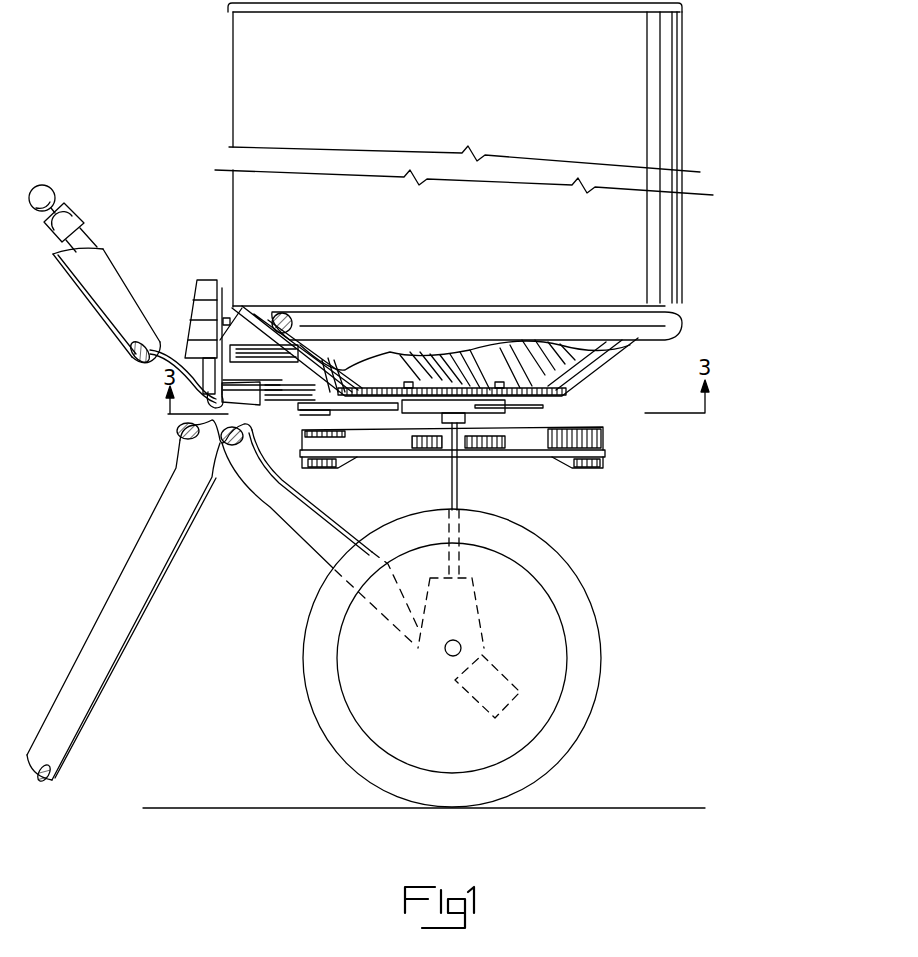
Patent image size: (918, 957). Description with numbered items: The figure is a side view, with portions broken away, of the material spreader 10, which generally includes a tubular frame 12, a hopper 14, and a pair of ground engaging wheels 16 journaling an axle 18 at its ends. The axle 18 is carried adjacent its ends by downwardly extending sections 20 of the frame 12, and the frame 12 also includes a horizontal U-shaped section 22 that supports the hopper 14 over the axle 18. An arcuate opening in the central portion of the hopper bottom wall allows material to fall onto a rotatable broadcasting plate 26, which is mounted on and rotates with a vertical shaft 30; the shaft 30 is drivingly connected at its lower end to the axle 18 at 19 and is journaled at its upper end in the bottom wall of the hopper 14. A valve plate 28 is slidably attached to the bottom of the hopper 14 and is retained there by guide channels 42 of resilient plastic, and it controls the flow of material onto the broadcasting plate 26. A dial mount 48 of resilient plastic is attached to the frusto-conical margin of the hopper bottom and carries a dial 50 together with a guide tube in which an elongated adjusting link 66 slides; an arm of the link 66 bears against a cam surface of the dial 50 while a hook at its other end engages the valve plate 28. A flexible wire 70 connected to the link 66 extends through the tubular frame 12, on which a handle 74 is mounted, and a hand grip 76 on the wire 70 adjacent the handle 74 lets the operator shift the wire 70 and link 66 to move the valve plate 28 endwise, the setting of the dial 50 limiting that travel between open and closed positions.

The material spreader 10 is at (686, 42).
The tubular frame 12 is at (168, 538).
The hopper 14 is at (252, 66).
The ground engaging wheels 16 is at (590, 696).
The axle 18 is at (448, 654).
The drive connection 19 is at (470, 622).
The downwardly extending sections 20 is at (320, 545).
The horizontal U-shaped section 22 is at (680, 316).
The broadcasting plate 26 is at (533, 468).
The valve plate 28 is at (348, 415).
The vertical shaft 30 is at (458, 507).
The guide channels 42 is at (522, 408).
The dial mount 48 is at (244, 316).
The dial 50 is at (197, 296).
The adjusting link 66 is at (305, 403).
The flexible wire 70 is at (192, 352).
The handle 74 is at (82, 218).
The hand grip 76 is at (43, 189).